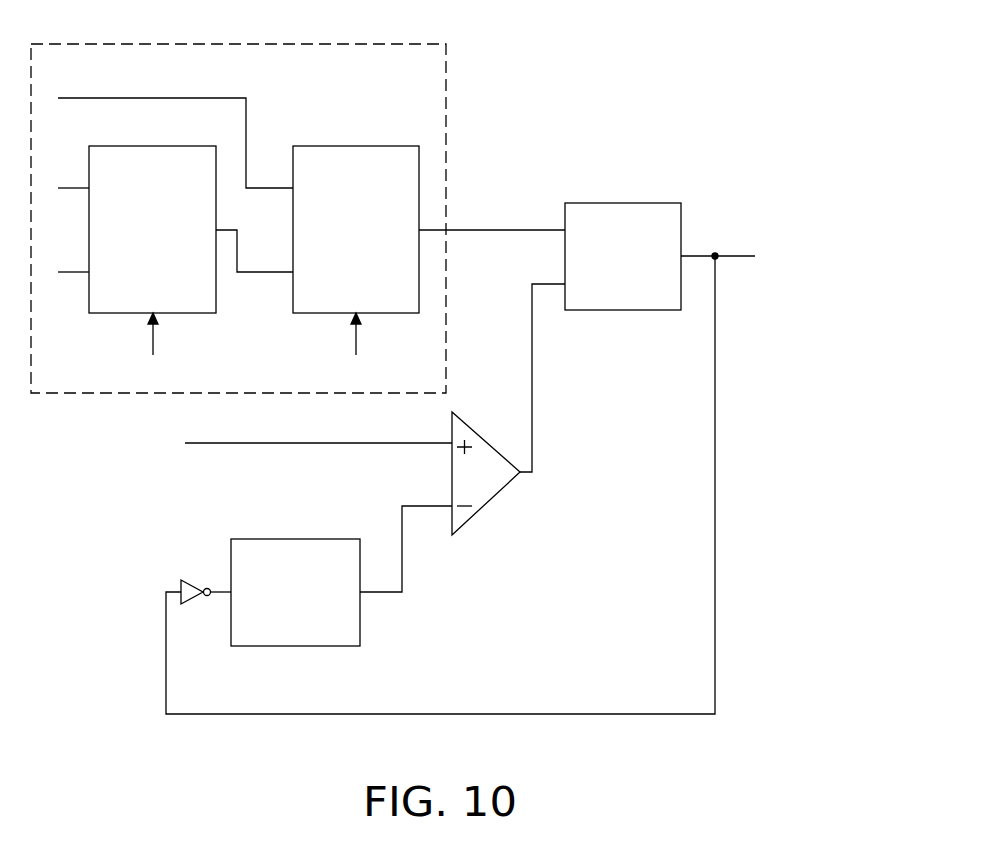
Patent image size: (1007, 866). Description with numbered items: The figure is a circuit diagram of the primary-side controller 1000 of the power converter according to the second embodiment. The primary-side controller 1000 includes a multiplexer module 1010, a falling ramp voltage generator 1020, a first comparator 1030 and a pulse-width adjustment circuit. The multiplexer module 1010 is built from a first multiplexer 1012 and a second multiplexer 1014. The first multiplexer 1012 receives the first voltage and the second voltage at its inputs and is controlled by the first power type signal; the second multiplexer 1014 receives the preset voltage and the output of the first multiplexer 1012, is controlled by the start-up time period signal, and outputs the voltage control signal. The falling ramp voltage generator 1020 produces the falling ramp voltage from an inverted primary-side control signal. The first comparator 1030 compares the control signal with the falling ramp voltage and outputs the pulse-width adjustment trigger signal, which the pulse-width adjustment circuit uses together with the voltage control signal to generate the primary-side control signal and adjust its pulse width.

The primary-side controller 1000 is at (799, 778).
The multiplexer module 1010 is at (282, 44).
The first multiplexer 1012 is at (137, 146).
The second multiplexer 1014 is at (340, 146).
The falling ramp voltage generator 1020 is at (262, 539).
The first comparator 1030 is at (488, 509).